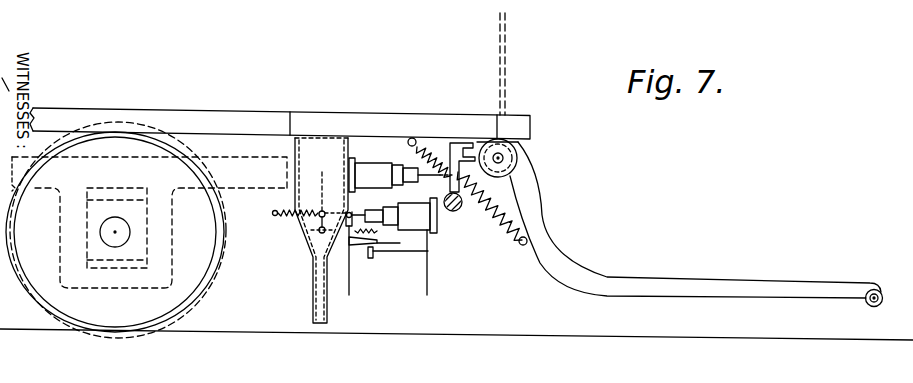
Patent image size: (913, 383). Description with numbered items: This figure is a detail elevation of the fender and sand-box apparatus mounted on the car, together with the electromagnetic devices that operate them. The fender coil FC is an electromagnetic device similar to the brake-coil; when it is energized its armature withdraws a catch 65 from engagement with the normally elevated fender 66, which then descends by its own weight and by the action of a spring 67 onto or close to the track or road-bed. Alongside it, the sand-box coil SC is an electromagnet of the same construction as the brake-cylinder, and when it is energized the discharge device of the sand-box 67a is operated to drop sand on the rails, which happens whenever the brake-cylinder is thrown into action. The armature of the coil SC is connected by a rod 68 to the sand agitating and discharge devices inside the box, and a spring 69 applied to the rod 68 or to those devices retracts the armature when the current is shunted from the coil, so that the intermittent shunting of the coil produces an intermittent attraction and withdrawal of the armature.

The catch 65 is at (456, 143).
The fender 66 is at (716, 279).
The spring 67 is at (490, 218).
The sand-box 67a is at (306, 236).
The rod 68 is at (353, 216).
The spring 69 is at (283, 222).
The fender coil FC is at (400, 165).
The sand-box coil SC is at (401, 215).